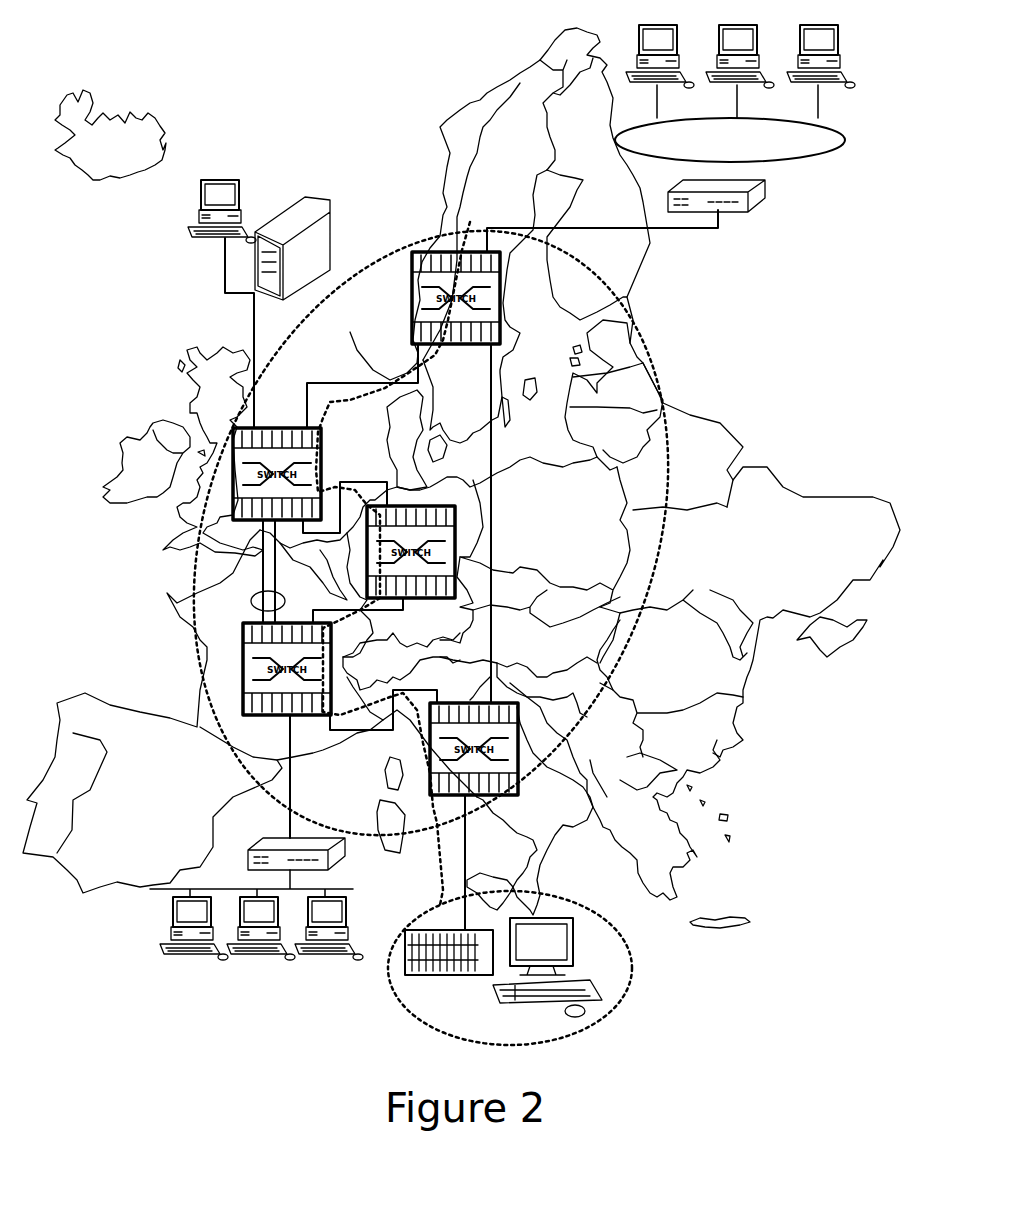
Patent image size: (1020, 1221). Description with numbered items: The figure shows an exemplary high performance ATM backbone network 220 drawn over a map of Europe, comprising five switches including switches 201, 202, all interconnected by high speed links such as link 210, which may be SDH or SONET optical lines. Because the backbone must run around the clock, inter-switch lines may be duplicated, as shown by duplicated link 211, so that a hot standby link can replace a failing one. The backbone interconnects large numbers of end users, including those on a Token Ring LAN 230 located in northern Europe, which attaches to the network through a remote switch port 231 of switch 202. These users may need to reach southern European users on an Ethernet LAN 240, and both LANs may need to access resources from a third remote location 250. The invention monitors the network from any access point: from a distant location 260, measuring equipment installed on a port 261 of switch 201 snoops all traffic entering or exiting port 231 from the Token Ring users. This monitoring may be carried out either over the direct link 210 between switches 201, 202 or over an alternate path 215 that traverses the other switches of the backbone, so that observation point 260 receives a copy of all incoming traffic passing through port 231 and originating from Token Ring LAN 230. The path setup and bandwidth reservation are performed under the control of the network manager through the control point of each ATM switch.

The switch 201 is at (523, 772).
The switch 202 is at (440, 243).
The link 210 is at (500, 524).
The duplicated link 211 is at (245, 601).
The alternate path 215 is at (327, 398).
The ATM backbone network 220 is at (655, 357).
The Token Ring LAN 230 is at (807, 165).
The remote switch port 231 is at (555, 222).
The Ethernet LAN 240 is at (246, 968).
The third remote location 250 is at (258, 198).
The distant location 260 is at (640, 963).
The port 261 is at (458, 883).